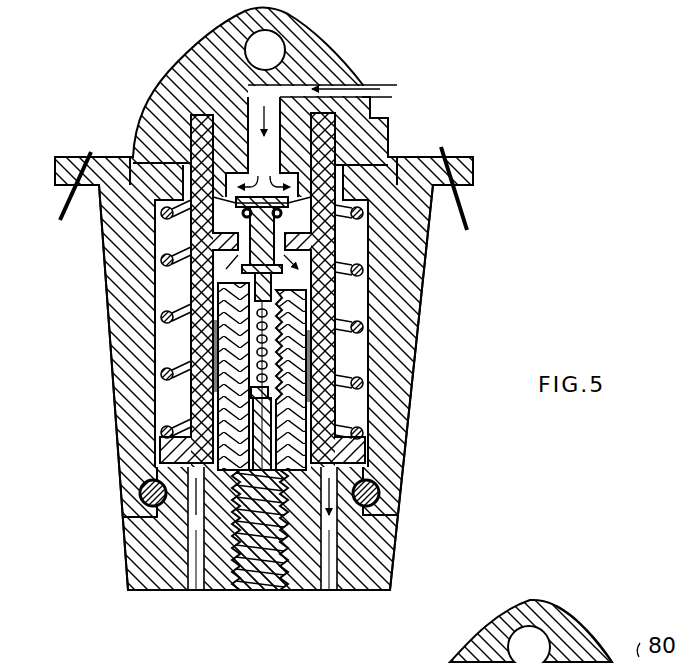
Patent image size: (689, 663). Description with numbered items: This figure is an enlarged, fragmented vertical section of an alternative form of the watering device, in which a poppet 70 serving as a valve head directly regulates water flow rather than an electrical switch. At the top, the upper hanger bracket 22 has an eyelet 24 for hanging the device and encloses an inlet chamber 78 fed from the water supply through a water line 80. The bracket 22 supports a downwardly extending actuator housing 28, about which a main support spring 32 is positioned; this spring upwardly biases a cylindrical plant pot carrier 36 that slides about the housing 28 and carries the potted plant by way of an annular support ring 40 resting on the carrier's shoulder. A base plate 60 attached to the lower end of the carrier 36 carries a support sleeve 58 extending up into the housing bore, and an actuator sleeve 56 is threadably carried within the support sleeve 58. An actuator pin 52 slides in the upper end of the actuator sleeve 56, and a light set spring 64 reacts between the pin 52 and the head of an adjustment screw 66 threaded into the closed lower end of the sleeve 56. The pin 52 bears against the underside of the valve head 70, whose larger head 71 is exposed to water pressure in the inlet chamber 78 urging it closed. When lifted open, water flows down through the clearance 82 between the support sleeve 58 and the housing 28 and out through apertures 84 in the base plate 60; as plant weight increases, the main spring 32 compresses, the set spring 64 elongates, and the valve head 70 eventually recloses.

The upper hanger bracket 22 is at (264, 295).
The eyelet 24 is at (228, 28).
The actuator housing 28 is at (197, 332).
The main support spring 32 is at (197, 293).
The plant pot carrier 36 is at (117, 447).
The annular support ring 40 is at (62, 162).
The actuator pin 52 is at (310, 279).
The actuator sleeve 56 is at (308, 368).
The support sleeve 58 is at (232, 408).
The base plate 60 is at (239, 529).
The set spring 64 is at (265, 340).
The adjustment screw 66 is at (273, 470).
The poppet 70 is at (255, 234).
The head of the valve head 71 is at (432, 224).
The inlet chamber 78 is at (220, 160).
The water line 80 is at (378, 85).
The clearance 82 is at (310, 412).
The apertures 84 is at (190, 590).